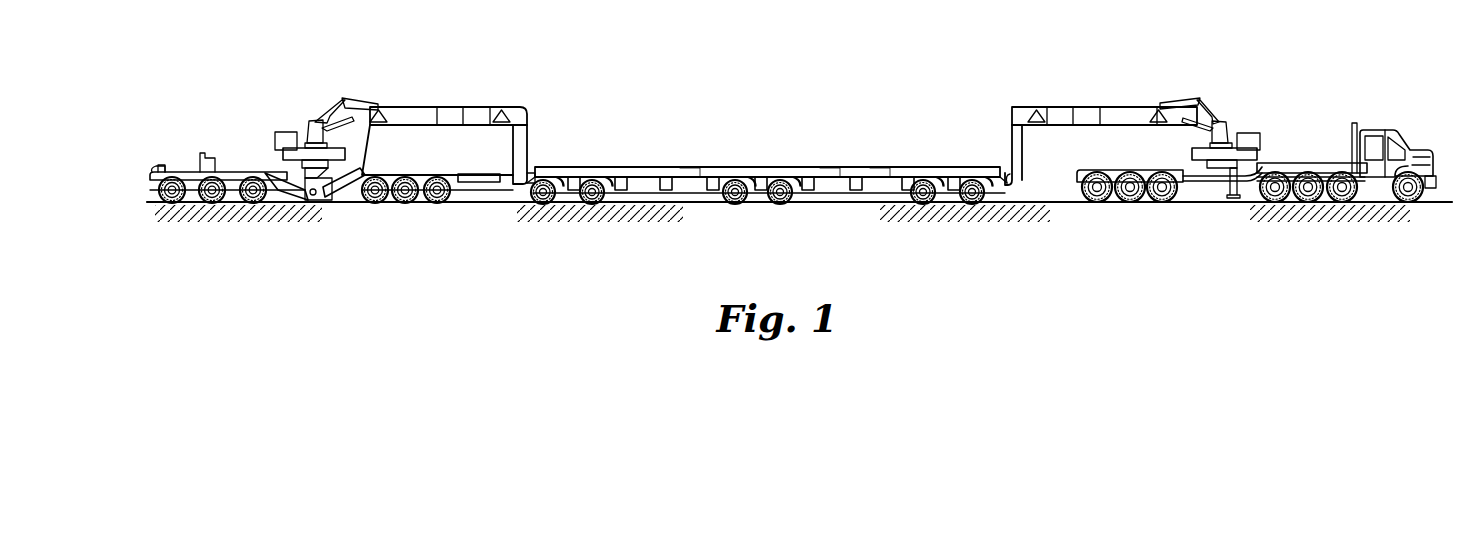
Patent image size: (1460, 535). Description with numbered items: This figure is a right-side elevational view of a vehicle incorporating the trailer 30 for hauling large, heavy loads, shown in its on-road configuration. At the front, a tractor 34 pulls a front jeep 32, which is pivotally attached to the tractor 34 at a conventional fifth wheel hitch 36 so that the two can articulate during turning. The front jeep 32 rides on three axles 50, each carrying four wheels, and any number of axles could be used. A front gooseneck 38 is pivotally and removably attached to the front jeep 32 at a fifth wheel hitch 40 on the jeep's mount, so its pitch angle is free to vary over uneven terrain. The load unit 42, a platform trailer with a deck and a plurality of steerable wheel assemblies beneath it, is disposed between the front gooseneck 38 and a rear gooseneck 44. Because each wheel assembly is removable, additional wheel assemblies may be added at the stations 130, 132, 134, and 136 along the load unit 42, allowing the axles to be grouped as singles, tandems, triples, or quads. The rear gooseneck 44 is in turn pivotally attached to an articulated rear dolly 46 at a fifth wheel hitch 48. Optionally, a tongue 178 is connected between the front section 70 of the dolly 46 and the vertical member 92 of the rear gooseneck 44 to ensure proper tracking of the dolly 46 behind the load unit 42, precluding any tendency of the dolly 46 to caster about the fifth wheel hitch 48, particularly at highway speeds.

The trailer 30 is at (1052, 95).
The front jeep 32 is at (1195, 183).
The tractor 34 is at (1400, 147).
The hitch 36 is at (1302, 162).
The front gooseneck 38 is at (1125, 110).
The fifth wheel hitch 40 is at (1233, 142).
The load unit 42 is at (807, 167).
The rear gooseneck 44 is at (450, 107).
The dolly 46 is at (337, 193).
The fifth wheel hitch 48 is at (308, 130).
The axles 50 is at (1150, 202).
The front section 70 is at (381, 174).
The vertical member 92 is at (528, 137).
The station 130 is at (640, 174).
The station 132 is at (690, 178).
The station 134 is at (828, 174).
The station 136 is at (880, 178).
The tongue 178 is at (473, 184).